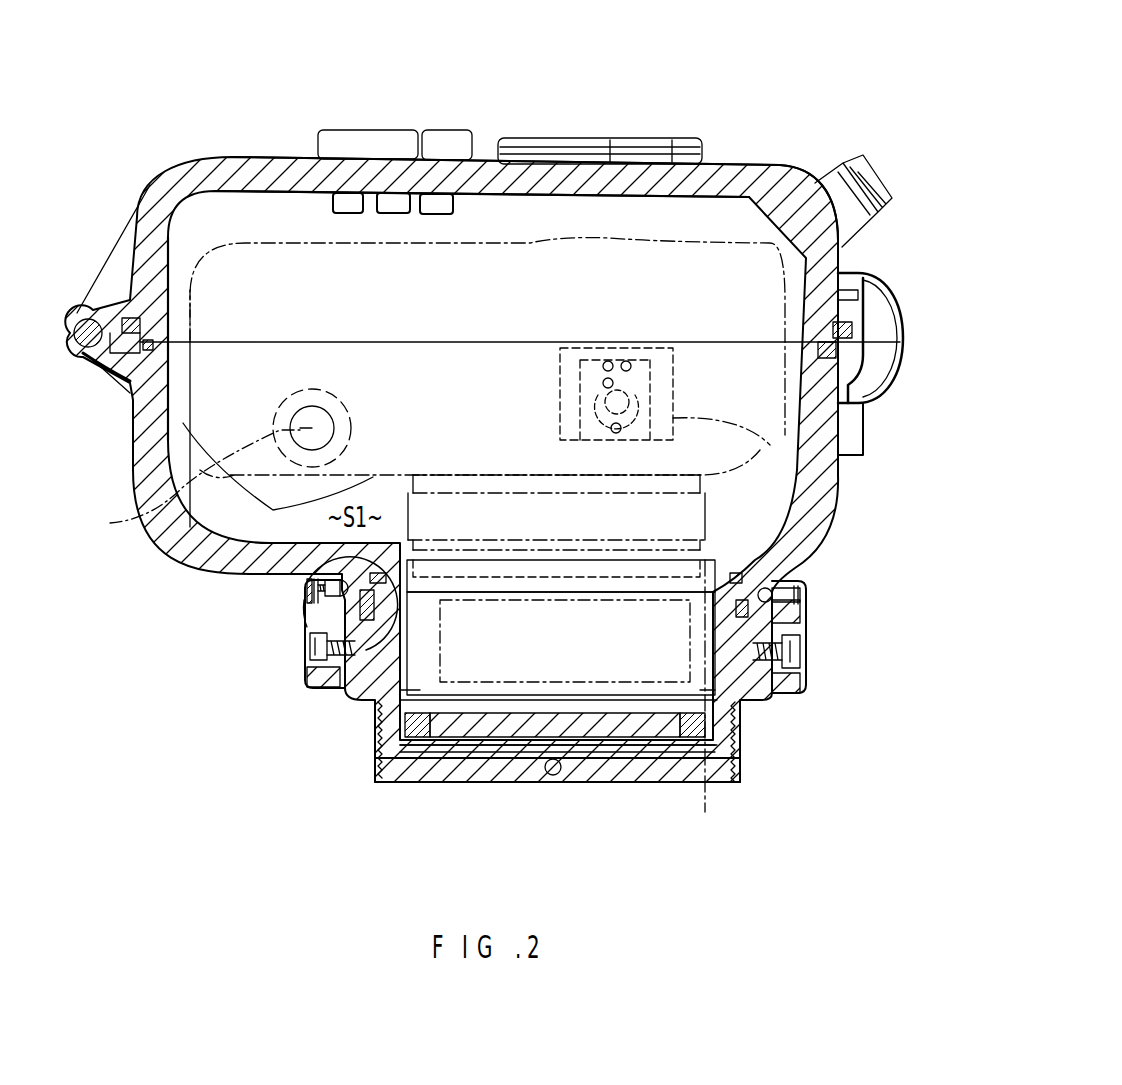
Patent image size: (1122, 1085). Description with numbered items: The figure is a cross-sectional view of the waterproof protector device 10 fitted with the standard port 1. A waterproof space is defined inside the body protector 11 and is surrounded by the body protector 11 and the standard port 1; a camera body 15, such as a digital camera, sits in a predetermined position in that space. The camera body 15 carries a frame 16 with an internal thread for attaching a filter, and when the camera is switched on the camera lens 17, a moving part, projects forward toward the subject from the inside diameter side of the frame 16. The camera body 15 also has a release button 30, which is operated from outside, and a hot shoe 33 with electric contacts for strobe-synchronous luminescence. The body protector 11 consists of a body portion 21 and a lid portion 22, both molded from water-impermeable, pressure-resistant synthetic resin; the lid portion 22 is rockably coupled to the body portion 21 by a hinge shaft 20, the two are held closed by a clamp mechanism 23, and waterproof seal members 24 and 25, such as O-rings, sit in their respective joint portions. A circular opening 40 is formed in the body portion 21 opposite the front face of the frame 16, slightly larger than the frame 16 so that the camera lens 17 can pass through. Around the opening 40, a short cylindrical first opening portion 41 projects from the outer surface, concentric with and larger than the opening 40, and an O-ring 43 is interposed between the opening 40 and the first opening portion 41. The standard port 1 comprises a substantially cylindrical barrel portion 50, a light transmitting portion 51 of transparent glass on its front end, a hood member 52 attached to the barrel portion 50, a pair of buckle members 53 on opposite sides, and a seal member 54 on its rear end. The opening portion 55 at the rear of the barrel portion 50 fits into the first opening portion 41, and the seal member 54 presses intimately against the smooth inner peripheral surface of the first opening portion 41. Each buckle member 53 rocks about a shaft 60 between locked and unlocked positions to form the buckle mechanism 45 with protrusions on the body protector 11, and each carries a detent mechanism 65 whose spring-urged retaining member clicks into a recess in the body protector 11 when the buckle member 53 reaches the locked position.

The standard port 1 is at (553, 788).
The waterproof protector device 10 is at (738, 90).
The body protector 11 is at (165, 550).
The camera body 15 is at (828, 262).
The frame 16 is at (800, 560).
The camera lens 17 is at (707, 702).
The hinge shaft 20 is at (87, 313).
The body portion 21 is at (145, 450).
The lid portion 22 is at (258, 170).
The clamp mechanism 23 is at (900, 380).
The waterproof seal member 24 is at (136, 372).
The waterproof seal member 25 is at (127, 313).
The release button 30 is at (188, 485).
The hot shoe 33 is at (815, 488).
The circular opening 40 is at (438, 565).
The first opening portion 41 is at (350, 688).
The O-ring 43 is at (308, 590).
The buckle mechanism 45 is at (318, 697).
The barrel portion 50 is at (372, 732).
The light transmitting portion 51 is at (510, 738).
The hood member 52 is at (400, 785).
The buckle member 53 is at (315, 640).
The seal member 54 is at (310, 625).
The opening portion 55 is at (604, 620).
The shaft 60 is at (312, 652).
The detent mechanism 65 is at (303, 593).